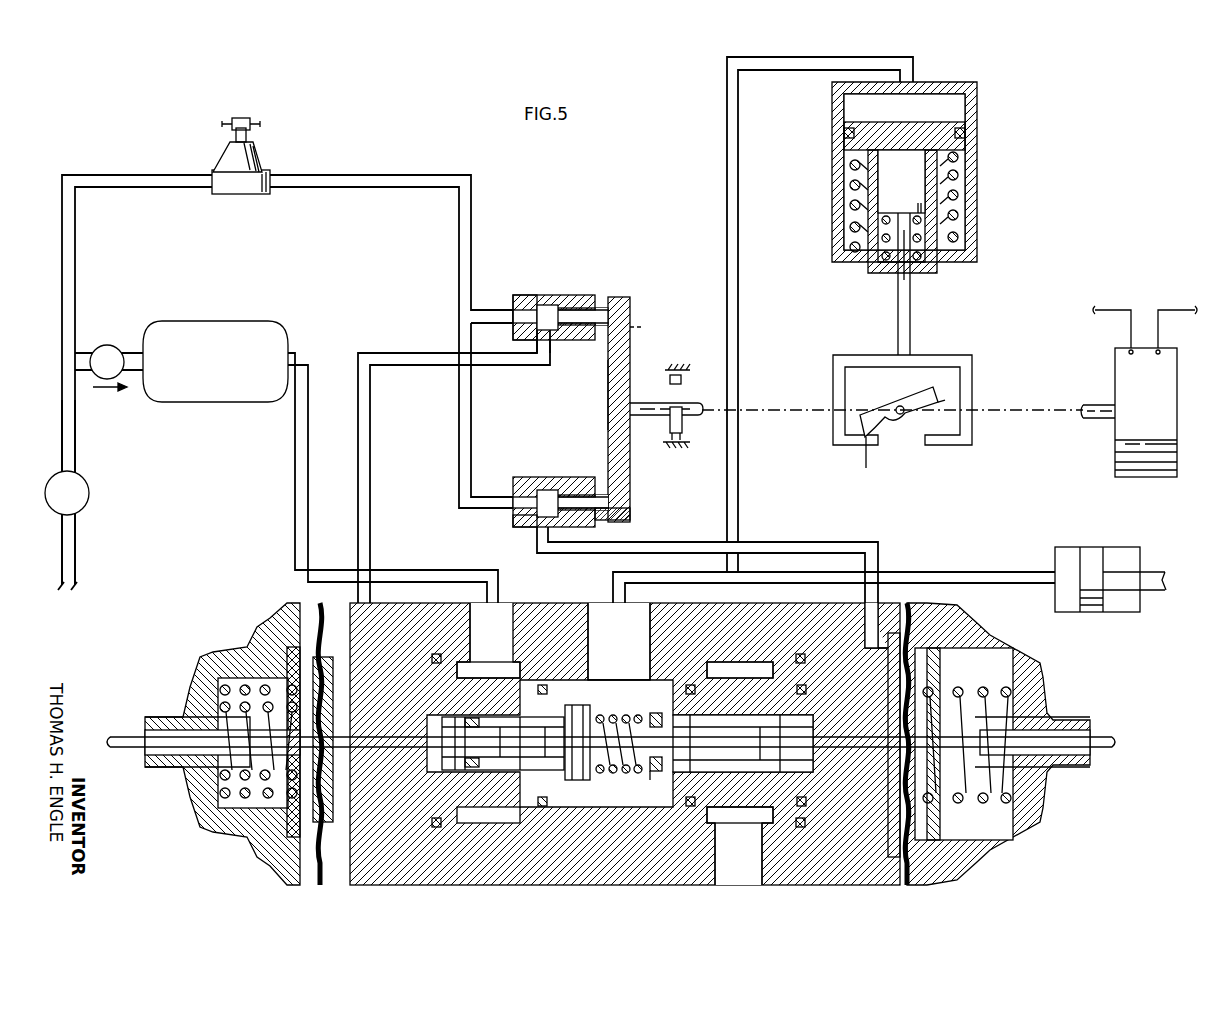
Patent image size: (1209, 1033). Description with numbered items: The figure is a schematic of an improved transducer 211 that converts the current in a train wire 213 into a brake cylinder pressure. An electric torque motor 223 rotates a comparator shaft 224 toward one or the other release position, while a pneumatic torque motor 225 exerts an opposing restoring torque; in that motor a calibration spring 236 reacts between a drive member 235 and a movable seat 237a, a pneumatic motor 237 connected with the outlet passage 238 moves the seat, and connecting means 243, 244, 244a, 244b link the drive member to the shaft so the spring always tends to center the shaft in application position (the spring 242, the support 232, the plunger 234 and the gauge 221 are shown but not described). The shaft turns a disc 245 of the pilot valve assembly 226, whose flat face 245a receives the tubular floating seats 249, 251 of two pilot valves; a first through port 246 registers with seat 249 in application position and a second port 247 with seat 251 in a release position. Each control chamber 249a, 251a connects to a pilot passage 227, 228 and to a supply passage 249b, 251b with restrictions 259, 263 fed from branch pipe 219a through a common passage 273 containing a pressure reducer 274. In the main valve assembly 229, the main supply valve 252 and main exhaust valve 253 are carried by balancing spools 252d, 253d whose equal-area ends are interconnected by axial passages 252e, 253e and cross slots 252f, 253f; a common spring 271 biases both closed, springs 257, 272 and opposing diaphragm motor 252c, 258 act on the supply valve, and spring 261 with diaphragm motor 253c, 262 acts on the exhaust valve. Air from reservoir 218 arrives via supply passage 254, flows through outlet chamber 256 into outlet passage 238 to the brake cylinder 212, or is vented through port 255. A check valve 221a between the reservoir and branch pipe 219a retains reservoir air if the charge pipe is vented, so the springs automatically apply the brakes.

The transducer 211 is at (1054, 174).
The brake cylinder 212 is at (1100, 612).
The train wire 213 is at (1160, 308).
The reservoir 218 is at (208, 325).
The branch pipe 219a is at (76, 446).
The gauge 221 is at (88, 492).
The check valve 221a is at (108, 345).
The torque motor 223 is at (682, 382).
The comparator shaft 224 is at (650, 400).
The pneumatic torque motor 225 is at (989, 274).
The pilot valve assembly 226 is at (665, 302).
The pilot passage 227 is at (372, 470).
The pilot passage 228 is at (796, 542).
The main valve assembly 229 is at (519, 584).
The support 232 is at (680, 448).
The plunger 234 is at (683, 426).
The drive member 235 is at (912, 320).
The calibration spring 236 is at (878, 260).
The pneumatic motor 237 is at (993, 116).
The movable seat 237a is at (850, 130).
The outlet passage 238 is at (608, 577).
The spring 242 is at (958, 220).
The connecting means 243 is at (945, 356).
The connecting means 244 is at (895, 405).
The connecting means 244a is at (871, 461).
The connecting means 244b is at (945, 402).
The disc 245 is at (615, 295).
The flat face 245a is at (607, 370).
The first through port 246 is at (640, 330).
The second port 247 is at (628, 506).
The tubular floating seat 249 is at (592, 298).
The control chamber 249a is at (547, 300).
The supply passage 249b is at (480, 312).
The tubular floating seat 251 is at (594, 482).
The control chamber 251a is at (545, 486).
The supply passage 251b is at (478, 503).
The main supply valve 252 is at (575, 716).
The diaphragm 252c is at (330, 605).
The balancing spool 252d is at (503, 745).
The axial passage 252e is at (490, 632).
The cross slot 252f is at (488, 667).
The main exhaust valve 253 is at (655, 712).
The diaphragm 253c is at (918, 625).
The balancing spool 253d is at (670, 797).
The axial passage 253e is at (740, 670).
The cross slot 253f is at (740, 815).
The supply passage 254 is at (410, 563).
The port 255 is at (758, 856).
The outlet chamber 256 is at (630, 795).
The compression spring 257 is at (240, 685).
The working space 258 is at (300, 855).
The restricted branch passage 259 is at (520, 298).
The compression spring 261 is at (985, 690).
The working space 262 is at (920, 850).
The restricted branch passage 263 is at (512, 524).
The common compression spring 271 is at (608, 710).
The additional spring 272 is at (200, 777).
The common passage 273 is at (337, 183).
The pressure reducer 274 is at (255, 160).